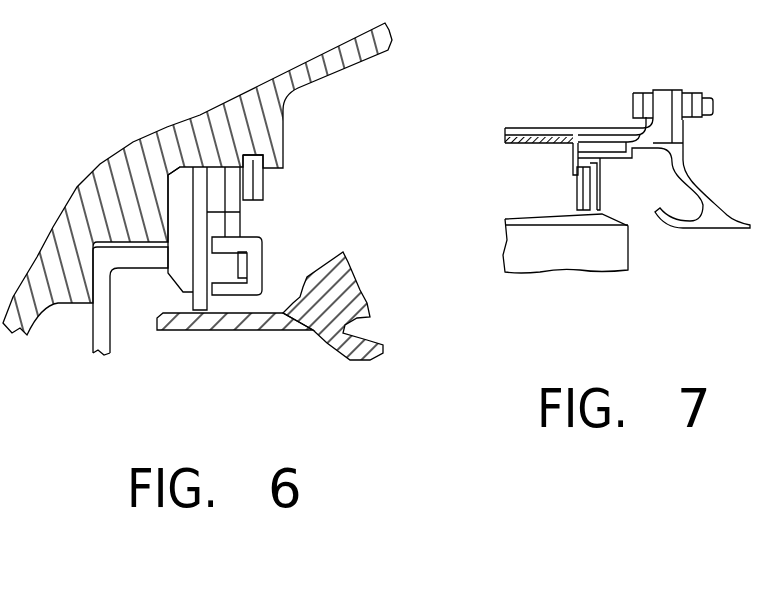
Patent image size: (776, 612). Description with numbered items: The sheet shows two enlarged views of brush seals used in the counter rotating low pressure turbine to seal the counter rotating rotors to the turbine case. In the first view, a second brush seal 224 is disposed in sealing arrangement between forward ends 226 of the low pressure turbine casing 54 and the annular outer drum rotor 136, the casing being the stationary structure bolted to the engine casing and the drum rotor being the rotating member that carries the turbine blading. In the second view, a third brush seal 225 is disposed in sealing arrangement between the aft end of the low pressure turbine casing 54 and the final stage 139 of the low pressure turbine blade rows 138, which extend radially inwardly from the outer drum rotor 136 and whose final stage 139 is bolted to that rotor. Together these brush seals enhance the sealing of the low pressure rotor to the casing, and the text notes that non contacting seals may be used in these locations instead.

In FIG. 6, the low pressure turbine casing 54 is at (303, 65).
In FIG. 7, the low pressure turbine casing 54 is at (570, 127).
In FIG. 6, the second brush seal 224 is at (195, 272).
In FIG. 6, the forward ends 226 is at (275, 318).
In FIG. 6, the outer drum rotor 136 is at (318, 267).
In FIG. 7, the third brush seal 225 is at (575, 197).
In FIG. 7, the low pressure turbine blade rows 138 is at (503, 253).
In FIG. 7, the final stage 139 is at (577, 257).